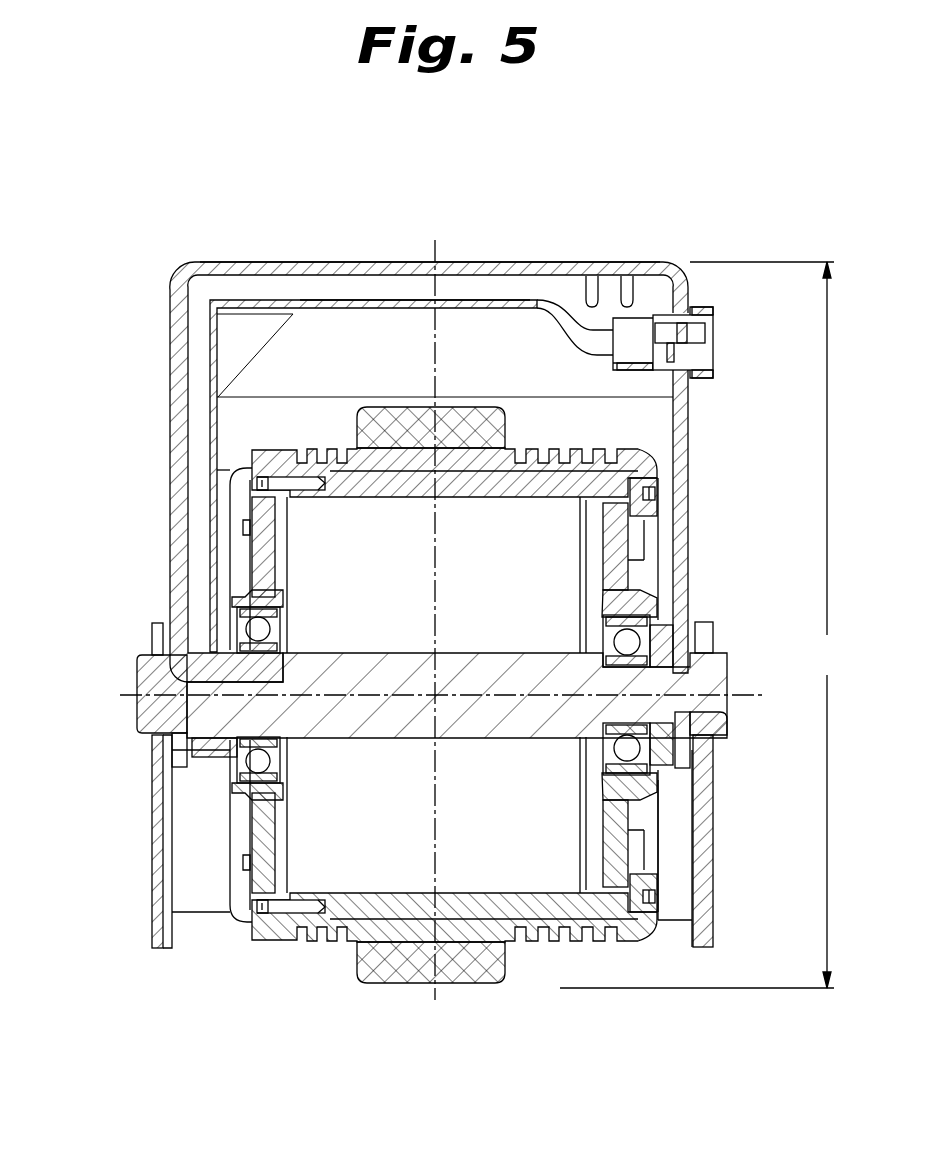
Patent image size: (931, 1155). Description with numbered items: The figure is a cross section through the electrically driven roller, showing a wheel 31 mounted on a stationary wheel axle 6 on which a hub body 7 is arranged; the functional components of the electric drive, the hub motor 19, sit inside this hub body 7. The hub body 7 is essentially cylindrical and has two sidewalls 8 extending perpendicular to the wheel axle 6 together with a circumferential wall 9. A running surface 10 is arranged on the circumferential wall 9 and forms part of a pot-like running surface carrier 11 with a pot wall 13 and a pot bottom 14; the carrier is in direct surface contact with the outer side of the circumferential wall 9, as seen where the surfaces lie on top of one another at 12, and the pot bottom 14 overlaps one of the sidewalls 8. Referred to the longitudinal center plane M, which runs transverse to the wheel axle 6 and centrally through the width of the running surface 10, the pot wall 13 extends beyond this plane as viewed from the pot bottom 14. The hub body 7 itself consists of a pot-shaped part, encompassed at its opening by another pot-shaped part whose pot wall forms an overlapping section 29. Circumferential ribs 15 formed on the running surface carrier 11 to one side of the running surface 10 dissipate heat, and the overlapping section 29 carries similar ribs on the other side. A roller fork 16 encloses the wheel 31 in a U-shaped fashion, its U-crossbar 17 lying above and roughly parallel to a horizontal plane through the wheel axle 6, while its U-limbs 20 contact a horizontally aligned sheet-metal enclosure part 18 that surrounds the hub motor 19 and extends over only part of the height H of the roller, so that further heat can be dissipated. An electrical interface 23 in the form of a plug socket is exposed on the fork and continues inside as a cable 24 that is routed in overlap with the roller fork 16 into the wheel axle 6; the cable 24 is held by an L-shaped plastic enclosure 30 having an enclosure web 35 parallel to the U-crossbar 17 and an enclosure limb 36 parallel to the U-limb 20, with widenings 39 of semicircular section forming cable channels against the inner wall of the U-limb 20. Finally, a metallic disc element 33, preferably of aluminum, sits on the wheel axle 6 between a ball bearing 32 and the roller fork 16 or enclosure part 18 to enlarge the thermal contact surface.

The wheel axle 6 is at (183, 702).
The hub body 7 is at (216, 867).
The sidewalls 8 is at (252, 830).
The circumferential wall 9 is at (480, 908).
The running surface 10 is at (392, 965).
The running surface carrier 11 is at (612, 957).
The surfaces lying on top of one another 12 is at (357, 968).
The pot wall 13 is at (420, 940).
The pot bottom 14 is at (632, 862).
The circumferential ribs 15 is at (580, 460).
The roller fork 16 is at (166, 283).
The U-crossbar 17 is at (397, 262).
The enclosure part 18 is at (155, 920).
The hub motor 19 is at (371, 832).
The U-limbs 20 is at (180, 382).
The electrical interface 23 is at (729, 351).
The cable 24 is at (237, 285).
The overlapping section 29 is at (318, 455).
The enclosure 30 is at (468, 302).
The wheel 31 is at (609, 422).
The ball bearing 32 is at (601, 625).
The disc element 33 is at (650, 648).
The enclosure web 35 is at (348, 300).
The enclosure limb 36 is at (210, 572).
The widenings 39 is at (213, 515).
The longitudinal center plane M is at (435, 572).
The height of the roller H is at (699, 625).